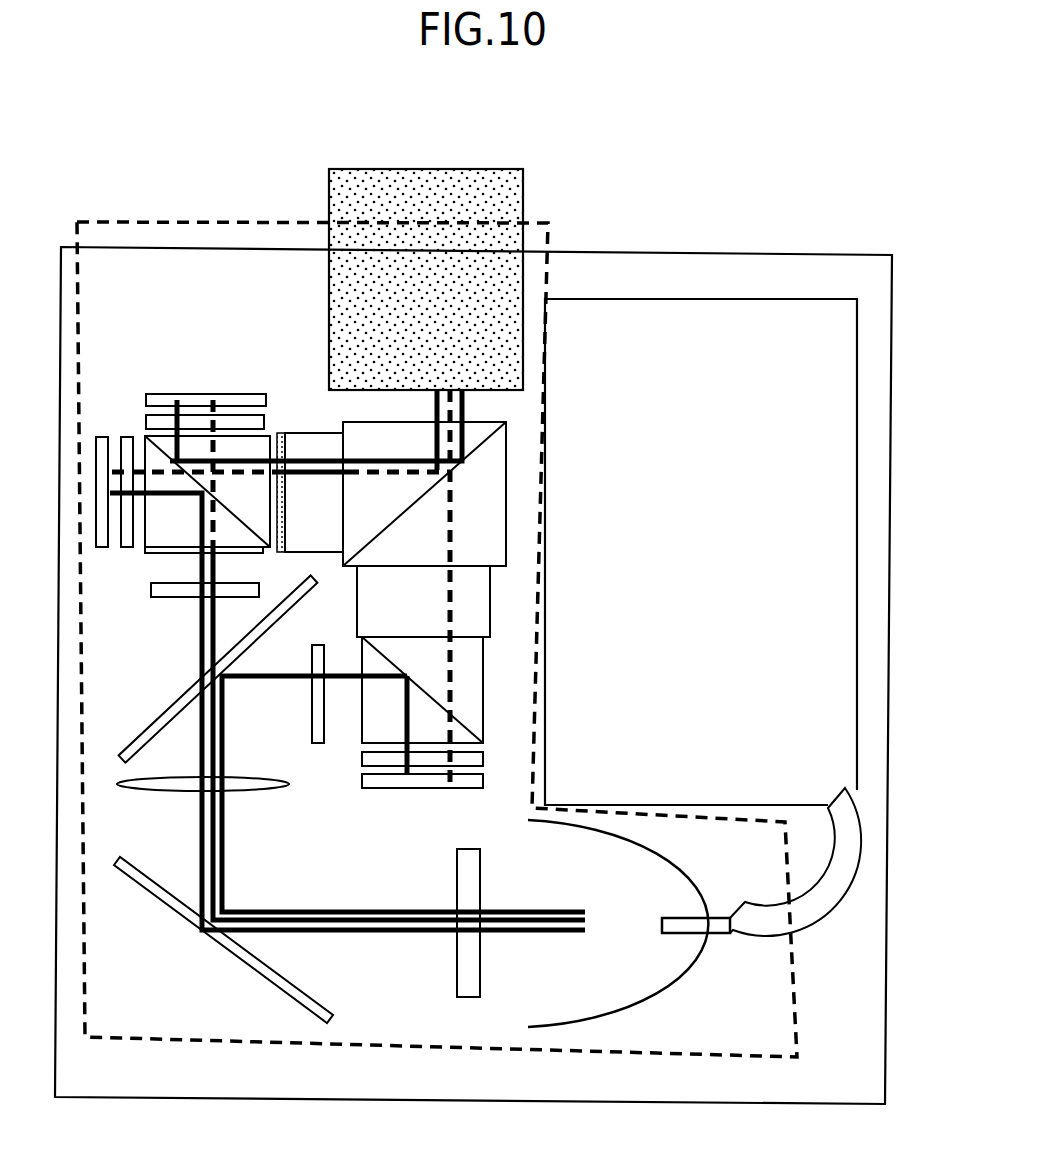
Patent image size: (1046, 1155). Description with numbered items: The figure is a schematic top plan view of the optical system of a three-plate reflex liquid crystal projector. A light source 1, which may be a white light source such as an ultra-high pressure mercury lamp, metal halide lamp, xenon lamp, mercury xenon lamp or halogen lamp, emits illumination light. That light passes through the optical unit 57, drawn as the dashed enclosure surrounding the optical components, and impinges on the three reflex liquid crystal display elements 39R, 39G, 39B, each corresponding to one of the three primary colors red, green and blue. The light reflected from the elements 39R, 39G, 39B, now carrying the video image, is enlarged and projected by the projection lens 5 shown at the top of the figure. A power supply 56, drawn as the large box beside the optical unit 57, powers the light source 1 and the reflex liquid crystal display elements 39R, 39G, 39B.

The light source 1 is at (663, 920).
The projection lens 5 is at (524, 190).
The power supply 56 is at (843, 605).
The optical unit 57 is at (150, 228).
The reflex liquid crystal display element 39R is at (102, 440).
The reflex liquid crystal display element 39B is at (203, 397).
The reflex liquid crystal display element 39G is at (423, 787).